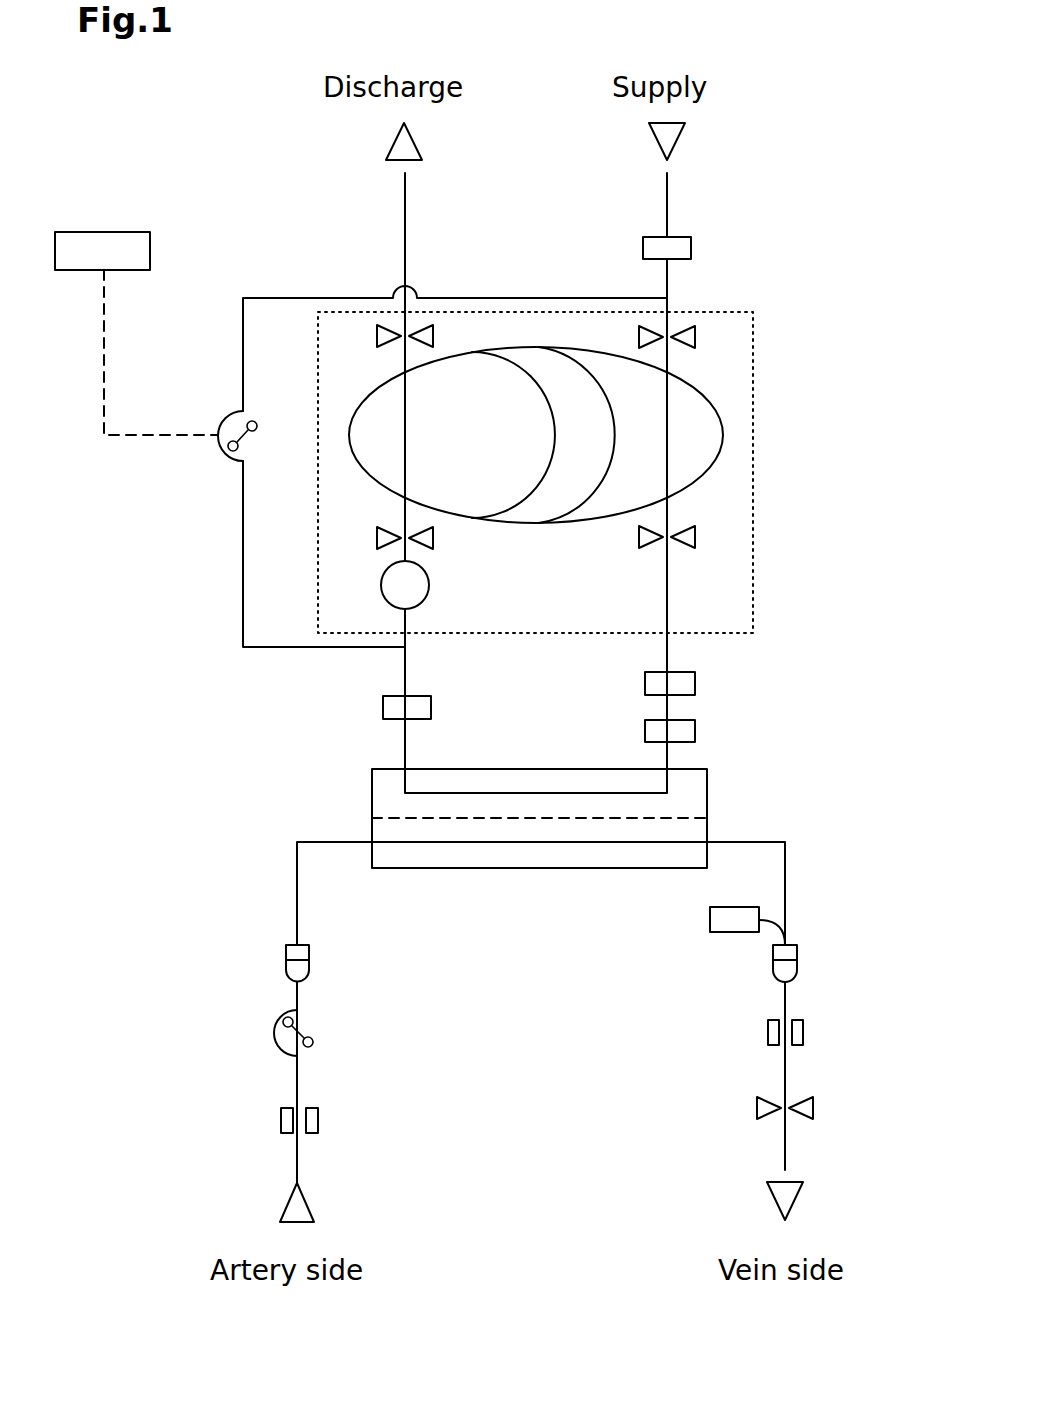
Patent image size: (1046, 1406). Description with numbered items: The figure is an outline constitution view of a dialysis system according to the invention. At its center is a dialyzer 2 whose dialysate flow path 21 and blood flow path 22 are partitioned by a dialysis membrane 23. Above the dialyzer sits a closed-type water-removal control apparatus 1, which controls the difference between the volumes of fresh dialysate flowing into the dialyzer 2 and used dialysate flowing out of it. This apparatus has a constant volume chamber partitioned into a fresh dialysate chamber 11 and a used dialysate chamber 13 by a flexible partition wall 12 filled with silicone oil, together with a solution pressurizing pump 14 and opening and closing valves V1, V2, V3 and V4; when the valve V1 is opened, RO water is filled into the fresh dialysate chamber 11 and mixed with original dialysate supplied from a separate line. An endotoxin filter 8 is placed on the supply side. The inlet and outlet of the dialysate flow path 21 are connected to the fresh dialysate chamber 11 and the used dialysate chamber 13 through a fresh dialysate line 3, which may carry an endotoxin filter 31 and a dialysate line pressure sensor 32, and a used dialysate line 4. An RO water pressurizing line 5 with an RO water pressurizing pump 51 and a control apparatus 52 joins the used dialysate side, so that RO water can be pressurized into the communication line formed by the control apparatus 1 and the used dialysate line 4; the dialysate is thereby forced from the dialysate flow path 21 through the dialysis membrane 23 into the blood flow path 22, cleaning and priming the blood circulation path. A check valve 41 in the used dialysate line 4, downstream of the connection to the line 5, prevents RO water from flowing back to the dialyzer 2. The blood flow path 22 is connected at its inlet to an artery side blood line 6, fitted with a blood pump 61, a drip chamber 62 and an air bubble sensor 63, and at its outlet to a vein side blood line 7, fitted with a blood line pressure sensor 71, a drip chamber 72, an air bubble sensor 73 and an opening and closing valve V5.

The closed-type water-removal control apparatus 1 is at (536, 304).
The dialyzer 2 is at (728, 805).
The fresh dialysate line 3 is at (668, 705).
The used dialysate line 4 is at (406, 671).
The RO water pressurizing line 5 is at (243, 580).
The artery side blood line 6 is at (297, 912).
The vein side blood line 7 is at (785, 888).
The endotoxin filter 8 is at (691, 246).
The fresh dialysate chamber 11 is at (678, 457).
The flexible partition wall 12 is at (593, 457).
The used dialysate chamber 13 is at (462, 457).
The solution pressurizing pump 14 is at (430, 588).
The dialysate flow path 21 is at (386, 783).
The blood flow path 22 is at (385, 855).
The dialysis membrane 23 is at (394, 816).
The endotoxin filter 31 is at (695, 683).
The dialysate line pressure sensor 32 is at (695, 737).
The check valve 41 is at (431, 709).
The RO water pressurizing pump 51 is at (228, 457).
The control apparatus 52 is at (102, 232).
The blood pump 61 is at (315, 1042).
The drip chamber 62 is at (309, 966).
The air bubble sensor 63 is at (318, 1124).
The blood line pressure sensor 71 is at (710, 922).
The drip chamber 72 is at (797, 962).
The air bubble sensor 73 is at (806, 1033).
The opening and closing valve V1 is at (695, 337).
The opening and closing valve V2 is at (376, 336).
The opening and closing valve V3 is at (695, 537).
The opening and closing valve V4 is at (376, 538).
The opening and closing valve V5 is at (813, 1110).